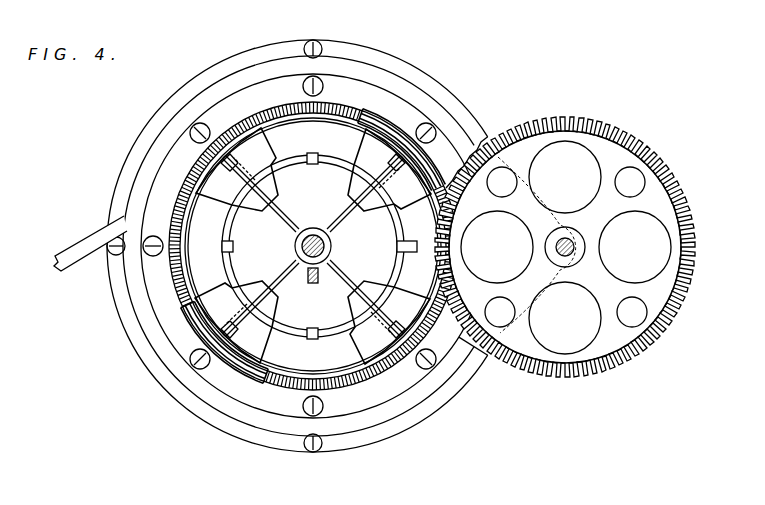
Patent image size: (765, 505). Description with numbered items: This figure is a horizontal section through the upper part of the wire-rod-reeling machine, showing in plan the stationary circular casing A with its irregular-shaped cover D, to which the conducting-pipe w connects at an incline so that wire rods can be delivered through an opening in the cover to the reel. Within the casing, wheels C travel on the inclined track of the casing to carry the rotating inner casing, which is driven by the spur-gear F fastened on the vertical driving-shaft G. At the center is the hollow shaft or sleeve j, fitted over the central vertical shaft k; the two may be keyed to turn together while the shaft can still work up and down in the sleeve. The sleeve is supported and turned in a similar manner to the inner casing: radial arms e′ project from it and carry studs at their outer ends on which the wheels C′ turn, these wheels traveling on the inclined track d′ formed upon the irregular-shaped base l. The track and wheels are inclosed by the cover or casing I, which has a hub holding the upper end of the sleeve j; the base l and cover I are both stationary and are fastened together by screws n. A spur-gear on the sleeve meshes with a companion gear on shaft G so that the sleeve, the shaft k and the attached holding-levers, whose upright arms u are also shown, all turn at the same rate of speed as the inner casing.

The stationary circular casing A is at (465, 383).
The wheels C is at (240, 350).
The wheels C′ is at (402, 118).
The cover D is at (142, 335).
The spur-gear F is at (660, 194).
The vertical driving-shaft G is at (575, 247).
The cover or casing I is at (168, 277).
The arrow a′ is at (295, 360).
The inclined track d′ is at (337, 133).
The radial arms e′ is at (278, 212).
The hollow shaft or sleeve j is at (332, 247).
The central vertical shaft k is at (300, 248).
The irregular-shaped base l is at (175, 128).
The screws n is at (312, 417).
The upright arms u is at (319, 80).
The conducting-pipe w is at (79, 242).